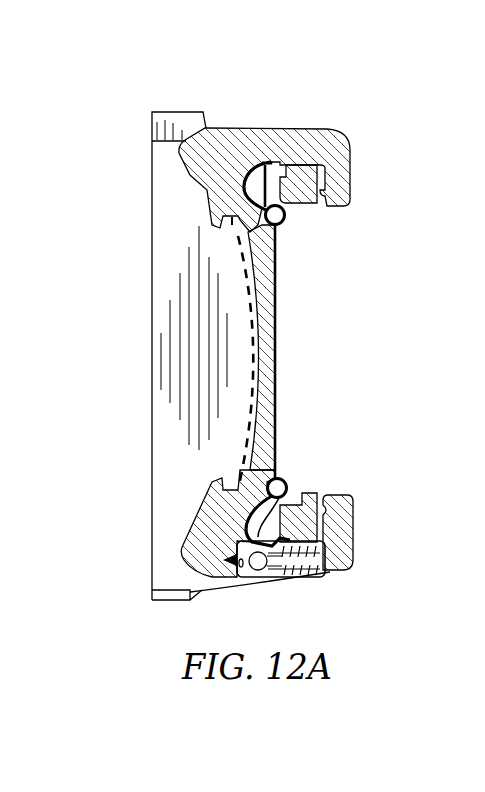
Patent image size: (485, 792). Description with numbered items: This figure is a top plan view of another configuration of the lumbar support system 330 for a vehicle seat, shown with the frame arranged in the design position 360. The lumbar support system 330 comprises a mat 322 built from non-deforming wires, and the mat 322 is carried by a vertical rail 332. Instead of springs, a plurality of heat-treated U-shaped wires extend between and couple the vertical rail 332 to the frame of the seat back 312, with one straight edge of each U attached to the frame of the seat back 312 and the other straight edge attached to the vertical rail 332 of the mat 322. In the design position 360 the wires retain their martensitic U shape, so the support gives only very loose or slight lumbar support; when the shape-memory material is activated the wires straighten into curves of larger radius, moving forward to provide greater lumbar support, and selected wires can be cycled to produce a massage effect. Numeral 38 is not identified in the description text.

The lumbar support system 330 is at (122, 54).
The seat back 312 is at (325, 145).
The retaining clip 38 is at (247, 180).
The vertical rail 332 is at (286, 217).
The mat 322 is at (277, 282).
The design position 360 is at (126, 373).